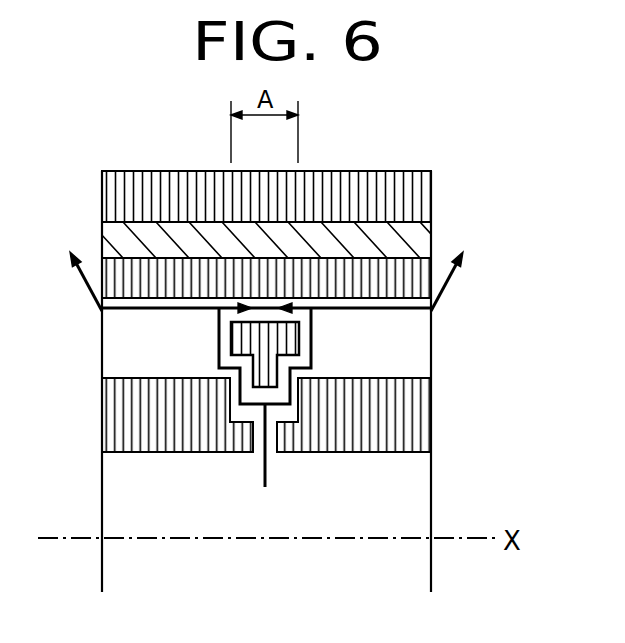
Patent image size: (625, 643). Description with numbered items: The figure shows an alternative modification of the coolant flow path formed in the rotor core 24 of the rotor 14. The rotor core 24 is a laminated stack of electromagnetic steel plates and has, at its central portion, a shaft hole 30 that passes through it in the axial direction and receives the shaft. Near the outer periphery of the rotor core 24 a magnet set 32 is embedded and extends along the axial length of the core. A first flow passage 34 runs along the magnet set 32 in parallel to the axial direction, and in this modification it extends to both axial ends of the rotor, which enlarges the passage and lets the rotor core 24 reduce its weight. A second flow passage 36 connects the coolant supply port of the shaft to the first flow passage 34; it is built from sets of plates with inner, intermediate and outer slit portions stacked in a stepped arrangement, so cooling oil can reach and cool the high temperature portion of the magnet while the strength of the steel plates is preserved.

The rotor 14 is at (489, 200).
The rotor core 24 is at (432, 172).
The shaft hole 30 is at (396, 453).
The magnet set 32 is at (118, 238).
The first flow passage 34 is at (417, 303).
The second flow passage 36 is at (303, 400).